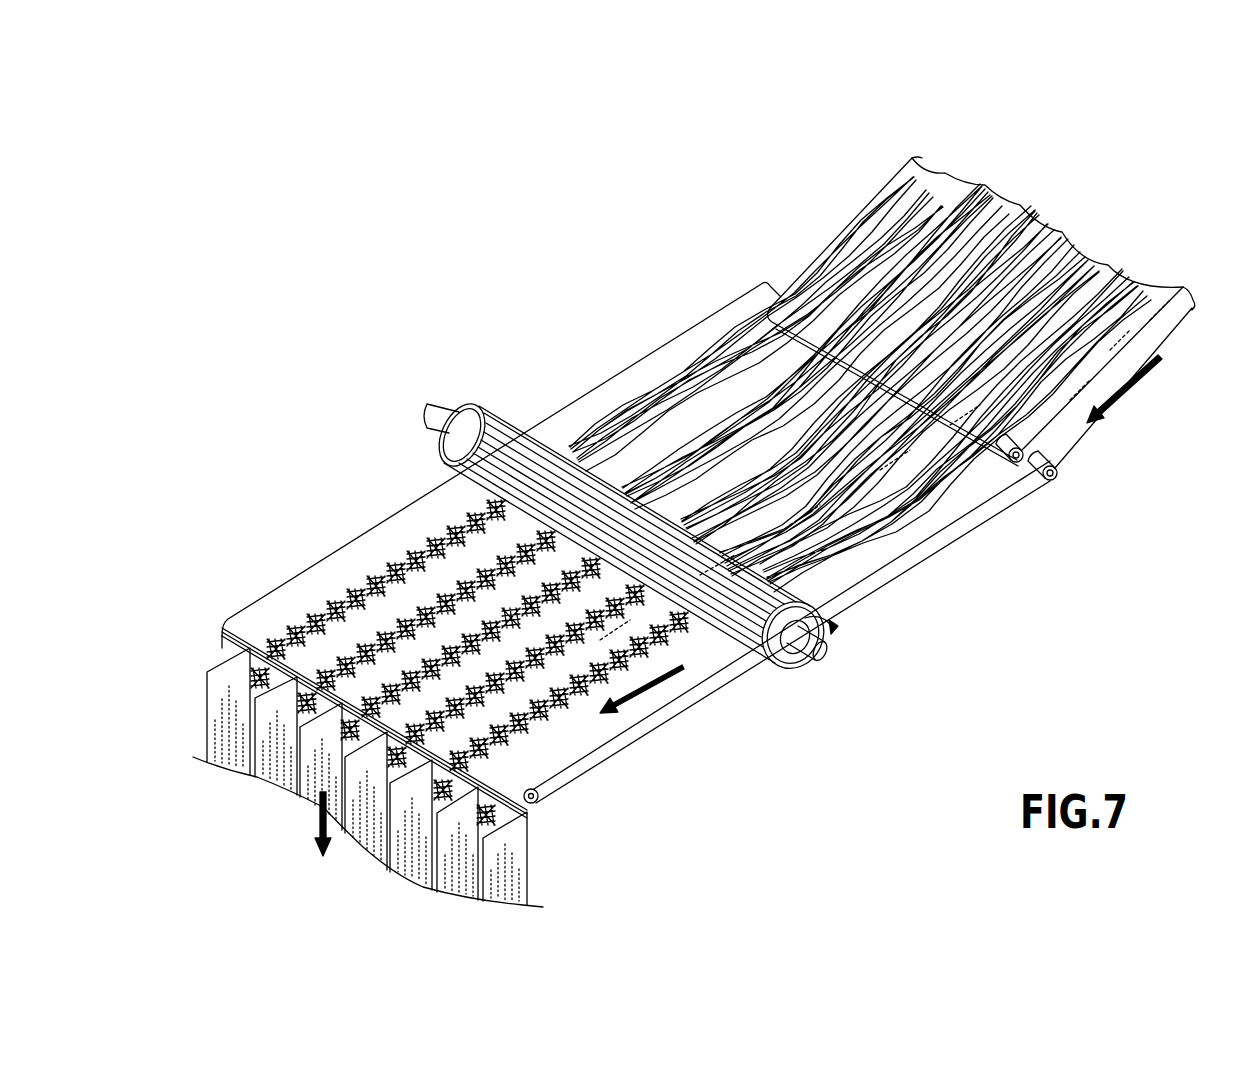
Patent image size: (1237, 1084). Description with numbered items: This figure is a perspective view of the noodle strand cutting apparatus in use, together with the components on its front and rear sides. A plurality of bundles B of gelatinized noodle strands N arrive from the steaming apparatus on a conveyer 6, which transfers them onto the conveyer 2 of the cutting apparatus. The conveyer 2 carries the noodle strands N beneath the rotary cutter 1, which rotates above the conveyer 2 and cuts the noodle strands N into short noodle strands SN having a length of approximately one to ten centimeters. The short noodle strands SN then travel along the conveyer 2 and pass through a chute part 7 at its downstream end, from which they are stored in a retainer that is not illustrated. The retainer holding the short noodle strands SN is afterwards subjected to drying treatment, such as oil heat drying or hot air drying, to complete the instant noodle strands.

The rotary cutter 1 is at (510, 420).
The conveyer 2 is at (890, 547).
The conveyer 6 is at (833, 253).
The chute part 7 is at (500, 853).
The bundles B is at (945, 162).
The noodle strands N is at (937, 237).
The short noodle strands SN is at (397, 620).